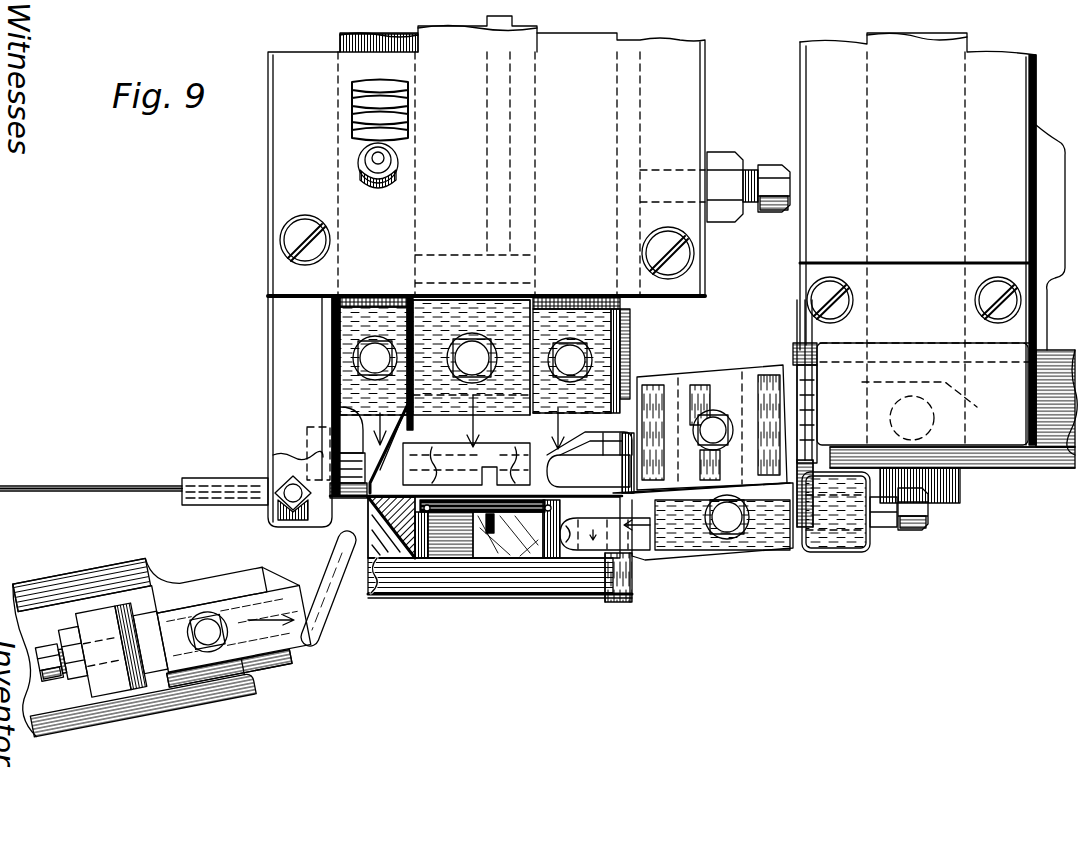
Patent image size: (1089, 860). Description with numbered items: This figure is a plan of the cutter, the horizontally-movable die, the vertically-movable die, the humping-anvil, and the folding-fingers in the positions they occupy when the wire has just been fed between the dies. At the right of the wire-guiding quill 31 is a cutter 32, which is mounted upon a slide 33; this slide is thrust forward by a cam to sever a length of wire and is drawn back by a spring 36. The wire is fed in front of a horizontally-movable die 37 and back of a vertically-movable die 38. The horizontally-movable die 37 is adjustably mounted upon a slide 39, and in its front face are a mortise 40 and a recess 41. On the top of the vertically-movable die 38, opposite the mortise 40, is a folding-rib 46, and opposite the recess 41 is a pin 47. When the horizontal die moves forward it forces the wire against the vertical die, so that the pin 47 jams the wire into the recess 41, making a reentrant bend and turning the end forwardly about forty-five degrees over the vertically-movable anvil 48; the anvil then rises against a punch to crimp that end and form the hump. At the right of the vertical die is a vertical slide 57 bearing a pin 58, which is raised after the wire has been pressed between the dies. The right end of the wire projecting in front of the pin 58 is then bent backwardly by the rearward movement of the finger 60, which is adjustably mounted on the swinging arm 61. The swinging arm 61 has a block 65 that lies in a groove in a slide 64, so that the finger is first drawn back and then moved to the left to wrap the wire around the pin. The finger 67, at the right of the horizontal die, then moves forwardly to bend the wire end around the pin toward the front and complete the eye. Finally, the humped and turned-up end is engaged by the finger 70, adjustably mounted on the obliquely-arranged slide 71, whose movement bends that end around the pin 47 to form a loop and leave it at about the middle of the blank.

The wire-guiding quill 31 is at (196, 484).
The cutter 32 is at (273, 452).
The slide 33 is at (300, 305).
The spring 36 is at (350, 112).
The horizontally-movable die 37 is at (481, 396).
The vertically-movable die 38 is at (507, 553).
The slide 39 is at (464, 46).
The mortise 40 is at (495, 481).
The recess 41 is at (434, 481).
The folding-rib 46 is at (478, 565).
The pin 47 is at (386, 558).
The vertically-movable anvil 48 is at (377, 562).
The vertical slide 57 is at (550, 563).
The pin 58 is at (563, 518).
The finger 60 is at (600, 557).
The swinging arm 61 is at (1045, 462).
The slide 64 is at (953, 503).
The block 65 is at (948, 384).
The finger 67 is at (580, 448).
The finger 70 is at (344, 555).
The obliquely-arranged slide 71 is at (62, 590).